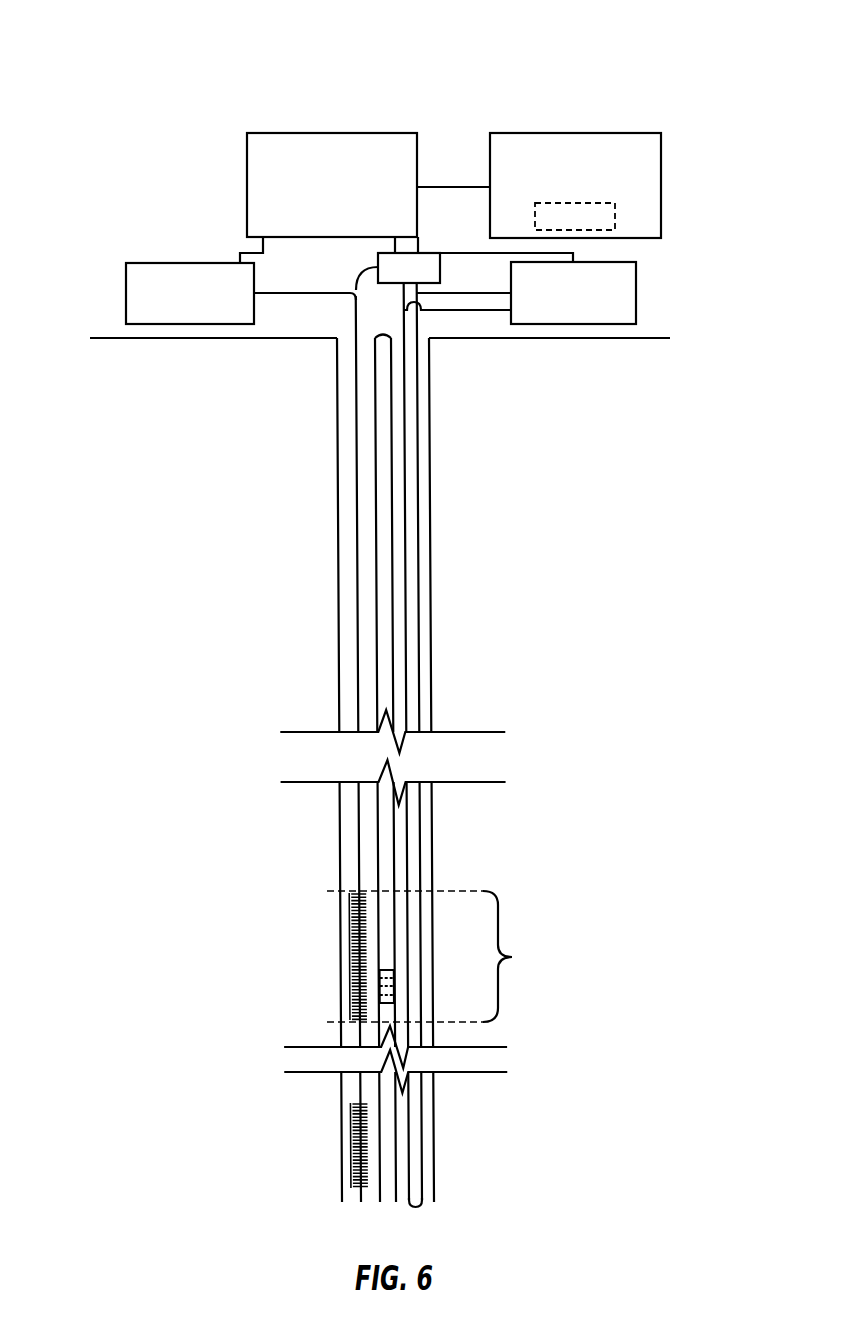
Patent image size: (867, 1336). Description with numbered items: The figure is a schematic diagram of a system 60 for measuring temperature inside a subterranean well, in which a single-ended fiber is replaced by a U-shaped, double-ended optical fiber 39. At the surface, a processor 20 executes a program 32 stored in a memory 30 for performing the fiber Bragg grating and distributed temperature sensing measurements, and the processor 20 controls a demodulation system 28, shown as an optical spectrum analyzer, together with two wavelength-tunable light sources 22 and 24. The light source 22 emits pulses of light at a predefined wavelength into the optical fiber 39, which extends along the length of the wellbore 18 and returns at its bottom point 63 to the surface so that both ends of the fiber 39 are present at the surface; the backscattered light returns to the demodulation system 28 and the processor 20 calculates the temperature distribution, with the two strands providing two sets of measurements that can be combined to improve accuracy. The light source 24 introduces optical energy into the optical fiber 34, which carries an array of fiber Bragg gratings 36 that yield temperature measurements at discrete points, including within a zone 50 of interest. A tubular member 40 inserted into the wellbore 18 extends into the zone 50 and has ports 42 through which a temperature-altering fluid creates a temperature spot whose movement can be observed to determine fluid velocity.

The system 60 is at (651, 40).
The processor 20 is at (262, 133).
The memory 30 is at (642, 133).
The program 32 is at (615, 215).
The demodulation system 28 is at (378, 265).
The light source 24 is at (126, 292).
The light source 22 is at (637, 292).
The optical fiber 34 is at (357, 440).
The U-shaped optical fiber 39 is at (417, 449).
The wellbore 18 is at (432, 502).
The tubular member 40 is at (393, 828).
The ports 42 is at (395, 988).
The zone 50 is at (441, 956).
The fiber Bragg gratings 36 is at (349, 900).
The bottom point 63 is at (415, 1207).